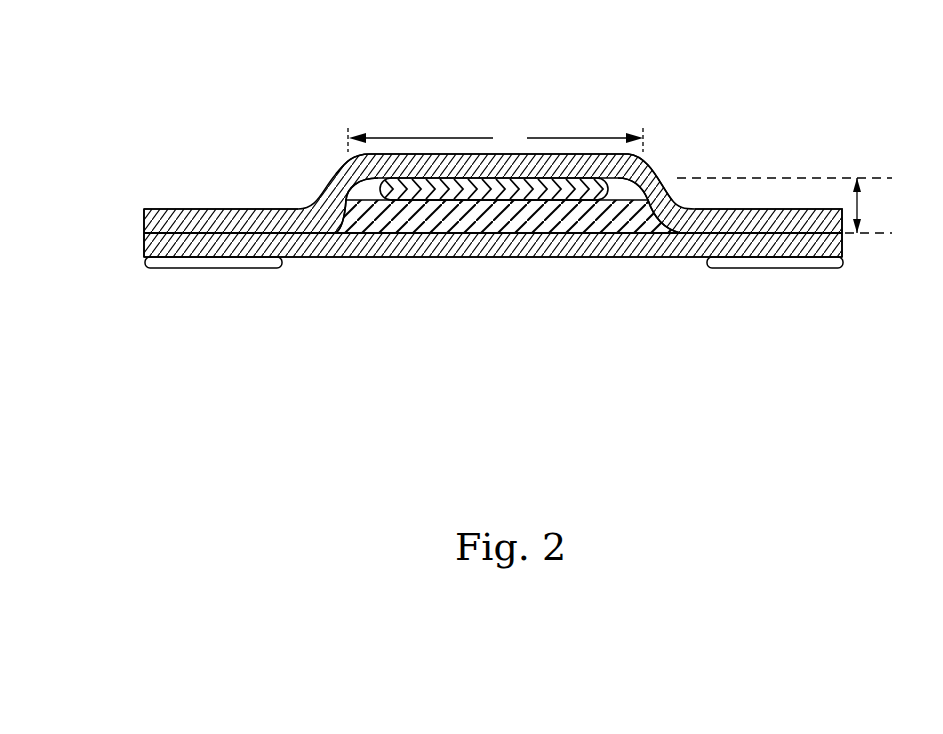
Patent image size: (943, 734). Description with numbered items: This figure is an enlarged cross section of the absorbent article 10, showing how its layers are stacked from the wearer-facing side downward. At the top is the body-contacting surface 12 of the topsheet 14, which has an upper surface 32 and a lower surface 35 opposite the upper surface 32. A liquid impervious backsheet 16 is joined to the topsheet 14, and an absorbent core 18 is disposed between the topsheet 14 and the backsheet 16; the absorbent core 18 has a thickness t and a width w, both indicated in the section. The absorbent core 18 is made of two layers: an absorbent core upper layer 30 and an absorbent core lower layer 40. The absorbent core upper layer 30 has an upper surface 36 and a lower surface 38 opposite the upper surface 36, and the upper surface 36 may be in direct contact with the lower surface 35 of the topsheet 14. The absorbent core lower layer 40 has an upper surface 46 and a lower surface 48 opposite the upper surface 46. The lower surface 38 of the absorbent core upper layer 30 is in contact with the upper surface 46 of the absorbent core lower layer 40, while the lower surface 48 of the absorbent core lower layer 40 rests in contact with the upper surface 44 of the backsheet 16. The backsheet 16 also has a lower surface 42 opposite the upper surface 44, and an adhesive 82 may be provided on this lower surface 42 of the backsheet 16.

The absorbent article 10 is at (345, 470).
The body-contacting surface 12 is at (440, 192).
The topsheet 14 is at (655, 180).
The liquid impervious backsheet 16 is at (630, 290).
The absorbent core 18 is at (367, 231).
The absorbent core upper layer 30 is at (633, 160).
The upper surface of the topsheet 32 is at (613, 128).
The lower surface of the topsheet 35 is at (473, 178).
The upper surface of the absorbent core upper layer 36 is at (432, 178).
The lower surface of the absorbent core upper layer 38 is at (540, 203).
The absorbent core lower layer 40 is at (427, 225).
The lower surface of the backsheet 42 is at (401, 232).
The upper surface of the backsheet 44 is at (343, 237).
The upper surface of the absorbent core lower layer 46 is at (467, 203).
The lower surface of the absorbent core lower layer 48 is at (620, 233).
The adhesive 82 is at (180, 273).